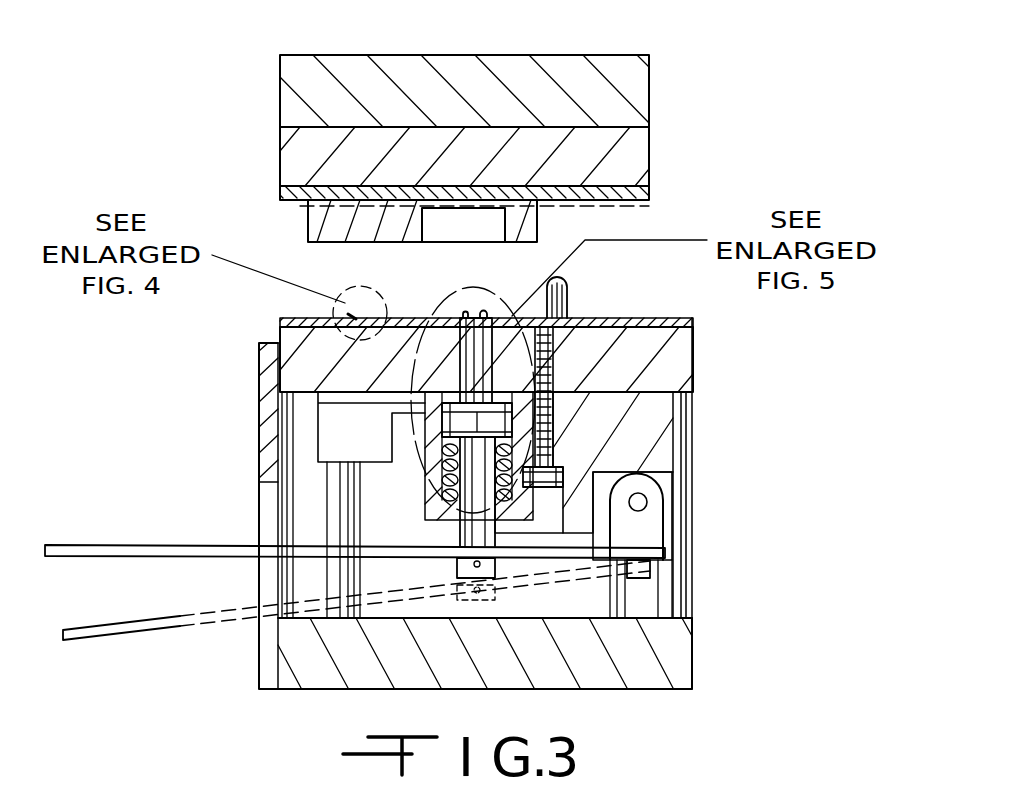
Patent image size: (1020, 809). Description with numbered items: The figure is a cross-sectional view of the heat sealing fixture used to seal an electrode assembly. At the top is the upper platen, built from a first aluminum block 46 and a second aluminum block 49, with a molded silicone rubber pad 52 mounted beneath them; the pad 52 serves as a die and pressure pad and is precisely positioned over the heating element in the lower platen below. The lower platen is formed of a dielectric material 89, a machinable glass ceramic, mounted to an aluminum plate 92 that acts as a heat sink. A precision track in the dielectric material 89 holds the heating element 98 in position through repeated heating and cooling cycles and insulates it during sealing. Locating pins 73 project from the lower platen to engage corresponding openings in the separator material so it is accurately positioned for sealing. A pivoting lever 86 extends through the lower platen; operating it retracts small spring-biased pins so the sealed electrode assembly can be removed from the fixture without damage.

The first aluminum block 46 is at (614, 67).
The second aluminum block 49 is at (640, 152).
The molded silicone rubber pad 52 is at (320, 220).
The locating pins 73 is at (566, 300).
The pivoting lever 86 is at (97, 545).
The dielectric material 89 is at (692, 319).
The aluminum plate 92 is at (688, 368).
The heating element 98 is at (352, 316).